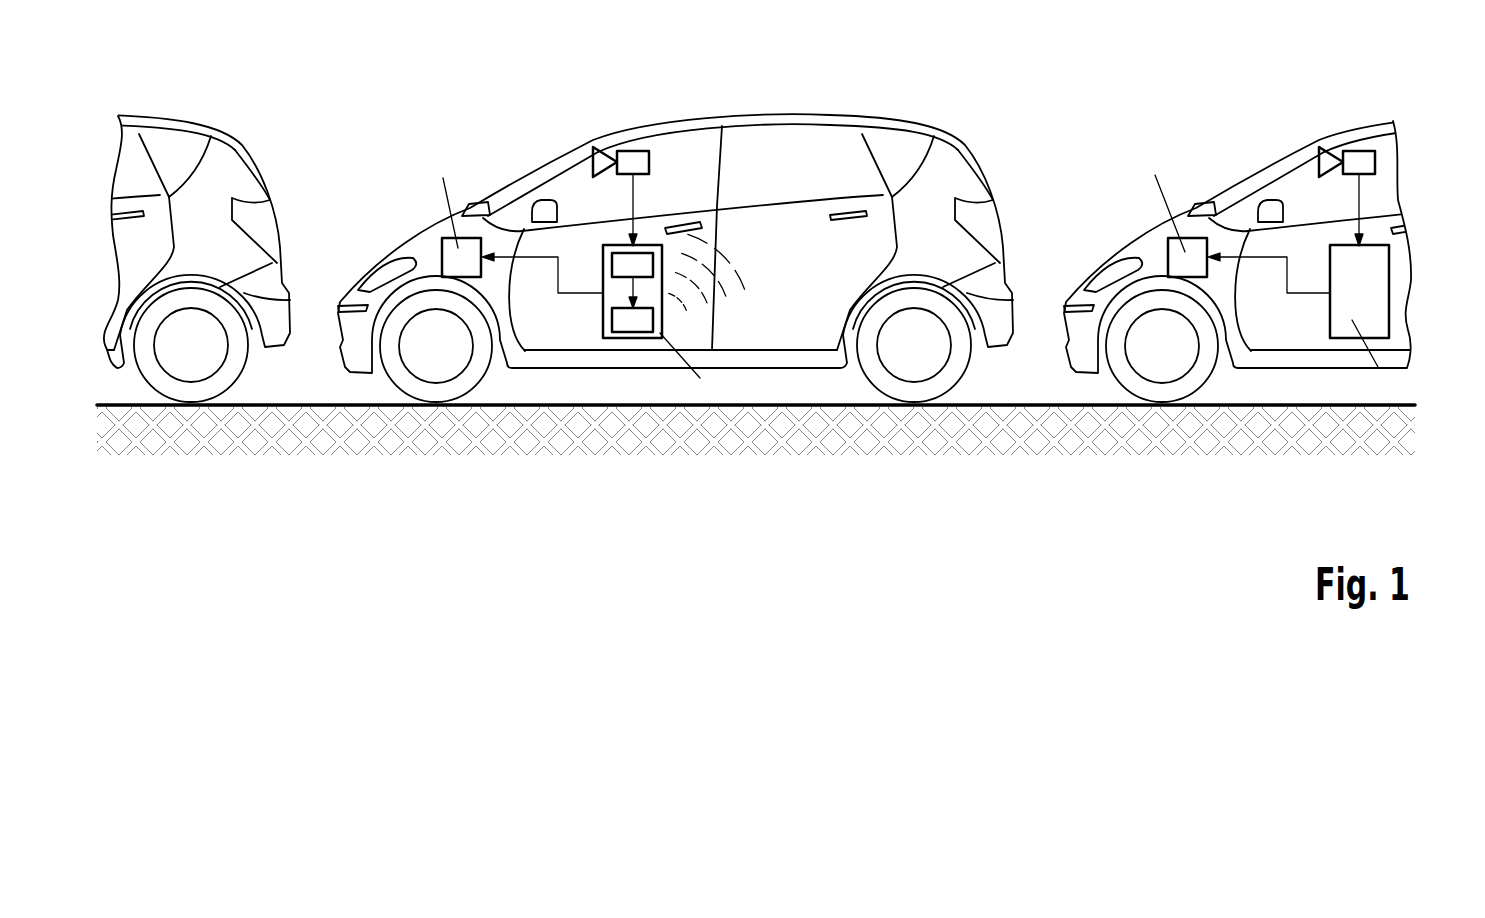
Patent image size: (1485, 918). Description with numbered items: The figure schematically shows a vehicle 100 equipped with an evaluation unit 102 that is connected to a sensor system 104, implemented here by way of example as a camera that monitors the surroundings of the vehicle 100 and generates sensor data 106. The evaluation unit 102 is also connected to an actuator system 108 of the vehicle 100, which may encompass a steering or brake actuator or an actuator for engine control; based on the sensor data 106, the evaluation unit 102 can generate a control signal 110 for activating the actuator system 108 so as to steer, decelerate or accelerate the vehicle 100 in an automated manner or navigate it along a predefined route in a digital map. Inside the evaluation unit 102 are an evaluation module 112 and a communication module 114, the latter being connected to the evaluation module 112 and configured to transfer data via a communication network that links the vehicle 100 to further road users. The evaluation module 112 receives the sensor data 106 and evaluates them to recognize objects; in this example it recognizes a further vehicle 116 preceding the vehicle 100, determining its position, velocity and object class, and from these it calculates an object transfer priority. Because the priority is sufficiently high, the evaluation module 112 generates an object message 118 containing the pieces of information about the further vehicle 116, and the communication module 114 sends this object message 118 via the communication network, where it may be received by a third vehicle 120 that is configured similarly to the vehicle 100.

The vehicle 100 is at (875, 118).
The evaluation unit 102 is at (603, 320).
The sensor system 104 is at (649, 162).
The sensor data 106 is at (634, 194).
The actuator system 108 is at (442, 246).
The control signal 110 is at (558, 281).
The evaluation module 112 is at (609, 264).
The communication module 114 is at (633, 332).
The further vehicle 116 is at (152, 117).
The object message 118 is at (752, 265).
The third vehicle 120 is at (1362, 123).